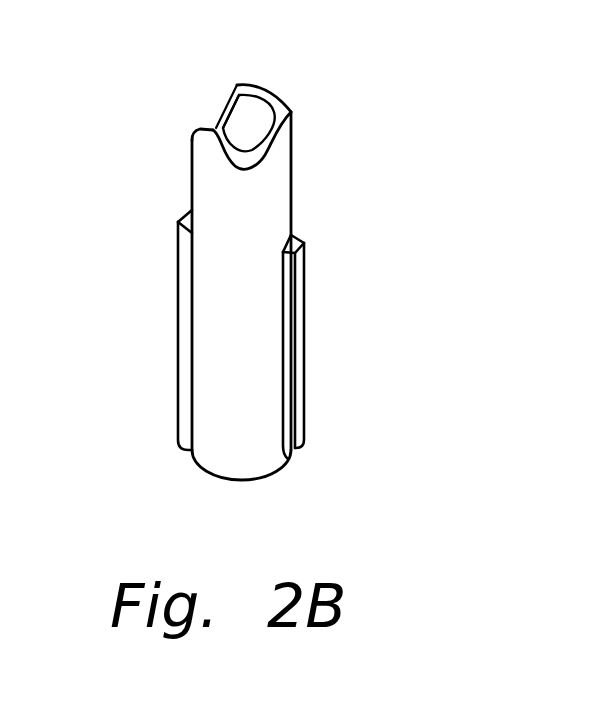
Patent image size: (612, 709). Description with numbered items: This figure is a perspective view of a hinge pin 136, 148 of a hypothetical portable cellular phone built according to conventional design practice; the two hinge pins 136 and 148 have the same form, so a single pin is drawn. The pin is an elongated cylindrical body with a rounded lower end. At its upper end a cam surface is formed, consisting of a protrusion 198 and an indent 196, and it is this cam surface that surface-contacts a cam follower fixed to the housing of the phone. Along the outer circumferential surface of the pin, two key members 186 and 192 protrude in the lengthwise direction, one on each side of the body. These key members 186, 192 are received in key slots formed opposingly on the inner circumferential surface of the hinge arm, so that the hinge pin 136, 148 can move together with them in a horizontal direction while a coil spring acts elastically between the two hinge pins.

The hinge pin 136 is at (340, 43).
The hinge pin 148 is at (251, 124).
The protrusion 198 is at (291, 110).
The indent 196 is at (252, 168).
The key member 192 is at (178, 350).
The key member 186 is at (303, 330).